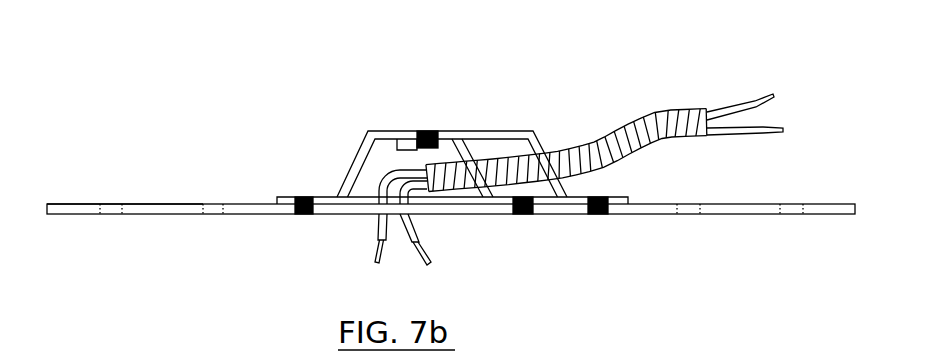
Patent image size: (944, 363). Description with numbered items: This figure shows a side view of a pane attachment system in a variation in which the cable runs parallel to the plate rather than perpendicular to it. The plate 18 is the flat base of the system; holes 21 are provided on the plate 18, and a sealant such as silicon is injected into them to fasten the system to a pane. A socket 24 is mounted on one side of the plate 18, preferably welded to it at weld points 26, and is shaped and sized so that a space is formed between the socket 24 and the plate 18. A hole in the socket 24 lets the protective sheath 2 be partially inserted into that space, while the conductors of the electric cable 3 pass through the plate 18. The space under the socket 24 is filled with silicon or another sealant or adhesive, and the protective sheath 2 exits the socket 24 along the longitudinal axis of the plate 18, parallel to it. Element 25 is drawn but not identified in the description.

The protective sheath 2 is at (616, 121).
The electric cable 3 is at (757, 145).
The plate 18 is at (160, 200).
The holes 21 is at (108, 200).
The socket 24 is at (490, 125).
The strut with leads 25 is at (483, 203).
The weld points 26 is at (301, 192).